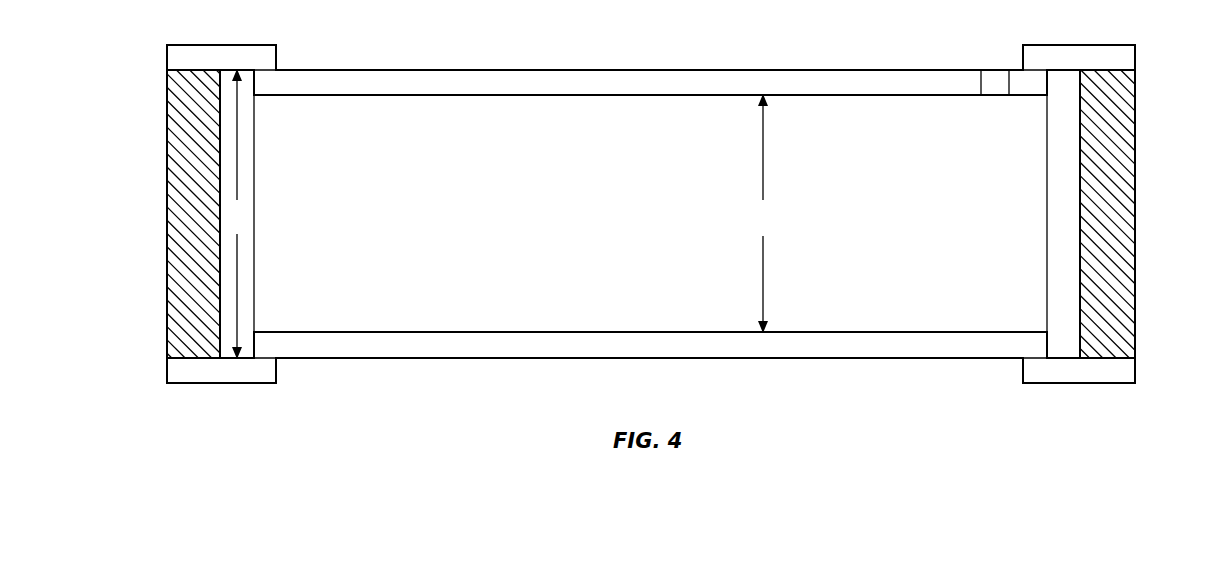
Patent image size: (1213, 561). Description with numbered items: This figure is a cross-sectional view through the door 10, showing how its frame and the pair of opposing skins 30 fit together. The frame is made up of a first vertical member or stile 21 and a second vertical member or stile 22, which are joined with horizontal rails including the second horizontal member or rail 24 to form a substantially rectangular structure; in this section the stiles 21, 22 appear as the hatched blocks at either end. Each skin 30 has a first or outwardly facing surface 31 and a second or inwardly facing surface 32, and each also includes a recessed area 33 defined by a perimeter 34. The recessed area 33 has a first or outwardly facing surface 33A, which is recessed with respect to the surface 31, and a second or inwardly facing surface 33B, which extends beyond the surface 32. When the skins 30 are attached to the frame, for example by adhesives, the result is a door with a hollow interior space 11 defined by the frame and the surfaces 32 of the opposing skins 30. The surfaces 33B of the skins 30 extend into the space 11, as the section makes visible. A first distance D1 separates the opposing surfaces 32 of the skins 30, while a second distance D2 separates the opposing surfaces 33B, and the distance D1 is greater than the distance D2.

The door 10 is at (123, 132).
The hollow interior space 11 is at (521, 136).
The first vertical member or stile 21 is at (180, 214).
The second vertical member or stile 22 is at (1120, 215).
The second horizontal member or rail 24 is at (679, 229).
The skin 30 is at (766, 50).
The first or outwardly facing surface 31 is at (190, 45).
The second or inwardly facing surface 32 is at (1070, 73).
The recessed area 33 is at (465, 70).
The first or outwardly facing surface of recessed area 33A is at (912, 70).
The second or inwardly facing surface of recessed area 33B is at (895, 96).
The perimeter 34 is at (277, 45).
The first distance D1 is at (236, 214).
The second distance D2 is at (762, 213).